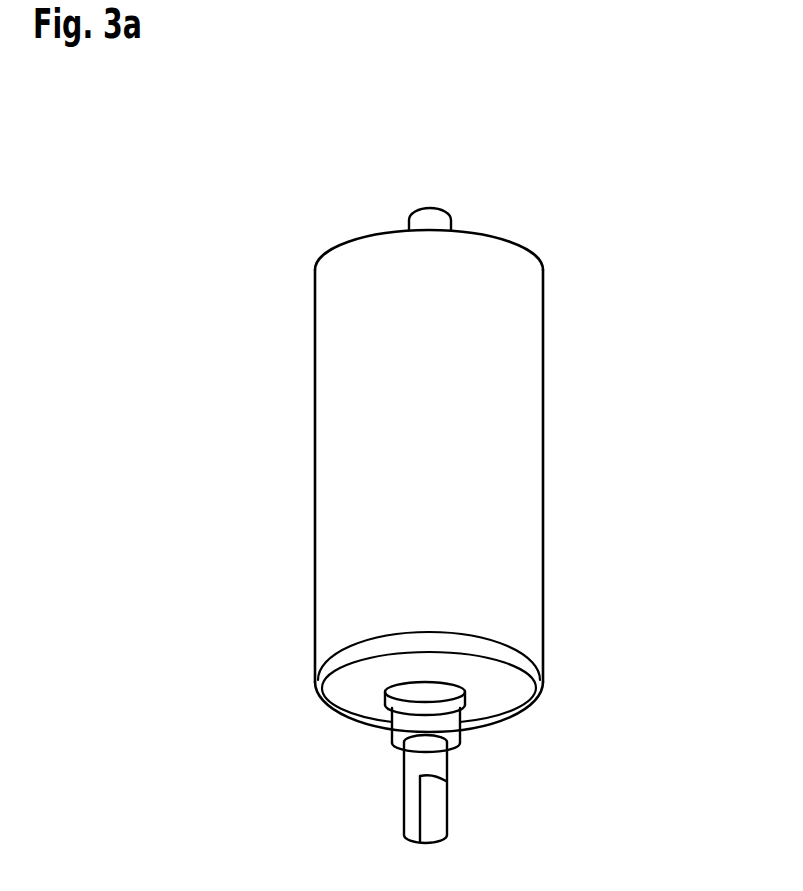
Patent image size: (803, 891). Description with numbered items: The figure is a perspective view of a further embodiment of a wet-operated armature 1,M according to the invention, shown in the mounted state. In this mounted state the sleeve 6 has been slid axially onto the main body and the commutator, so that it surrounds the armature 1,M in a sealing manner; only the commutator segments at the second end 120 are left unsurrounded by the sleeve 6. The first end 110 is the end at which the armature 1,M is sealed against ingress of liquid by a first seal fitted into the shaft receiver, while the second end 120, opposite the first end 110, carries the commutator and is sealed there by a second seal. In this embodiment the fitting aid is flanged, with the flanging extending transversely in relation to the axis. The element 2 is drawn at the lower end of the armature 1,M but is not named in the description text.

The armature in the mounted state 1,M is at (230, 225).
The sleeve 6 is at (358, 481).
The second end 120 is at (576, 257).
The first end 110 is at (574, 688).
The motor shaft 2 is at (435, 810).